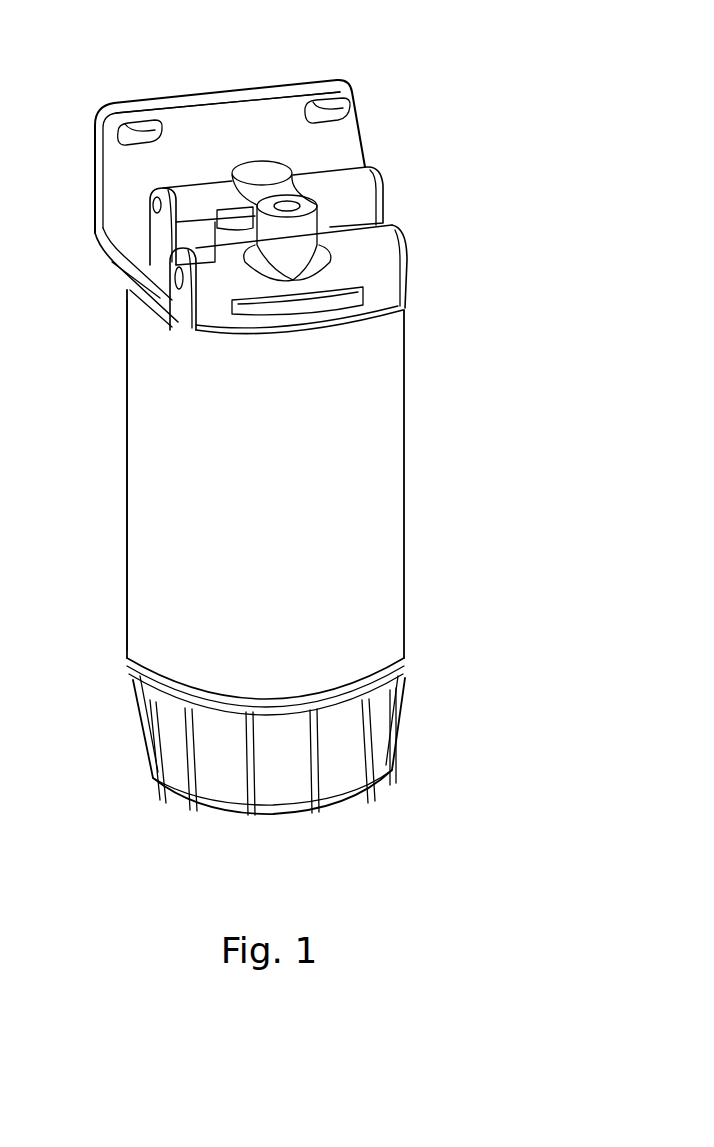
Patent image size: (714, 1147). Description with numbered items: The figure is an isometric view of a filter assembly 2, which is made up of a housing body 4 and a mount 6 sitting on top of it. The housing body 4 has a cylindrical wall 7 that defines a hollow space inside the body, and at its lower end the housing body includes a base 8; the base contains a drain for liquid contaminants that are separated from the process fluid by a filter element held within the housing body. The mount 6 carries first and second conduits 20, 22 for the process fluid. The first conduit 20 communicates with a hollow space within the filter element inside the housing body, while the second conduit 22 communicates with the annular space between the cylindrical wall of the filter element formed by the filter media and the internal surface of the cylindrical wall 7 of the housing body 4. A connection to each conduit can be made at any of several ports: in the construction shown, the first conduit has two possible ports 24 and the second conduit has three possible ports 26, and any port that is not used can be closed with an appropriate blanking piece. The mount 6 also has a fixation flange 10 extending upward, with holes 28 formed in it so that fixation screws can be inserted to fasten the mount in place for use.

The filter assembly 2 is at (522, 252).
The housing body 4 is at (390, 559).
The mount 6 is at (110, 173).
The cylindrical wall 7 is at (130, 440).
The base 8 is at (218, 790).
The fixation flange 10 is at (255, 91).
The first conduit 20 is at (366, 175).
The second conduit 22 is at (383, 263).
The ports 24 is at (383, 190).
The ports 26 is at (283, 203).
The holes 28 is at (135, 132).